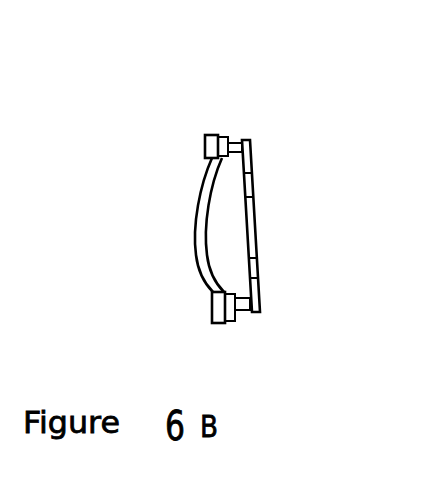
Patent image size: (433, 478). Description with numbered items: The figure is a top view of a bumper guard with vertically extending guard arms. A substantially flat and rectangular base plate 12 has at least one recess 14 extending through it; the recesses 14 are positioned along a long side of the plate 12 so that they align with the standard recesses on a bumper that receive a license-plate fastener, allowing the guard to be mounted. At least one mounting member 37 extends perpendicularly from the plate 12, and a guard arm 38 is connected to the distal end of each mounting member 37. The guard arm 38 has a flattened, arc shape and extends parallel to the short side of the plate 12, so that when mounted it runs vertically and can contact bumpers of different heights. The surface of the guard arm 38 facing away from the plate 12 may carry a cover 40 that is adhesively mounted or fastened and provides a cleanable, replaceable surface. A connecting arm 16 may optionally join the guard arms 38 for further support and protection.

The base plate 12 is at (254, 228).
The recess 14 is at (253, 193).
The flexible member 16 is at (198, 207).
The mounting member 37 is at (236, 142).
The guard arm 38 is at (222, 135).
The cover 40 is at (205, 142).